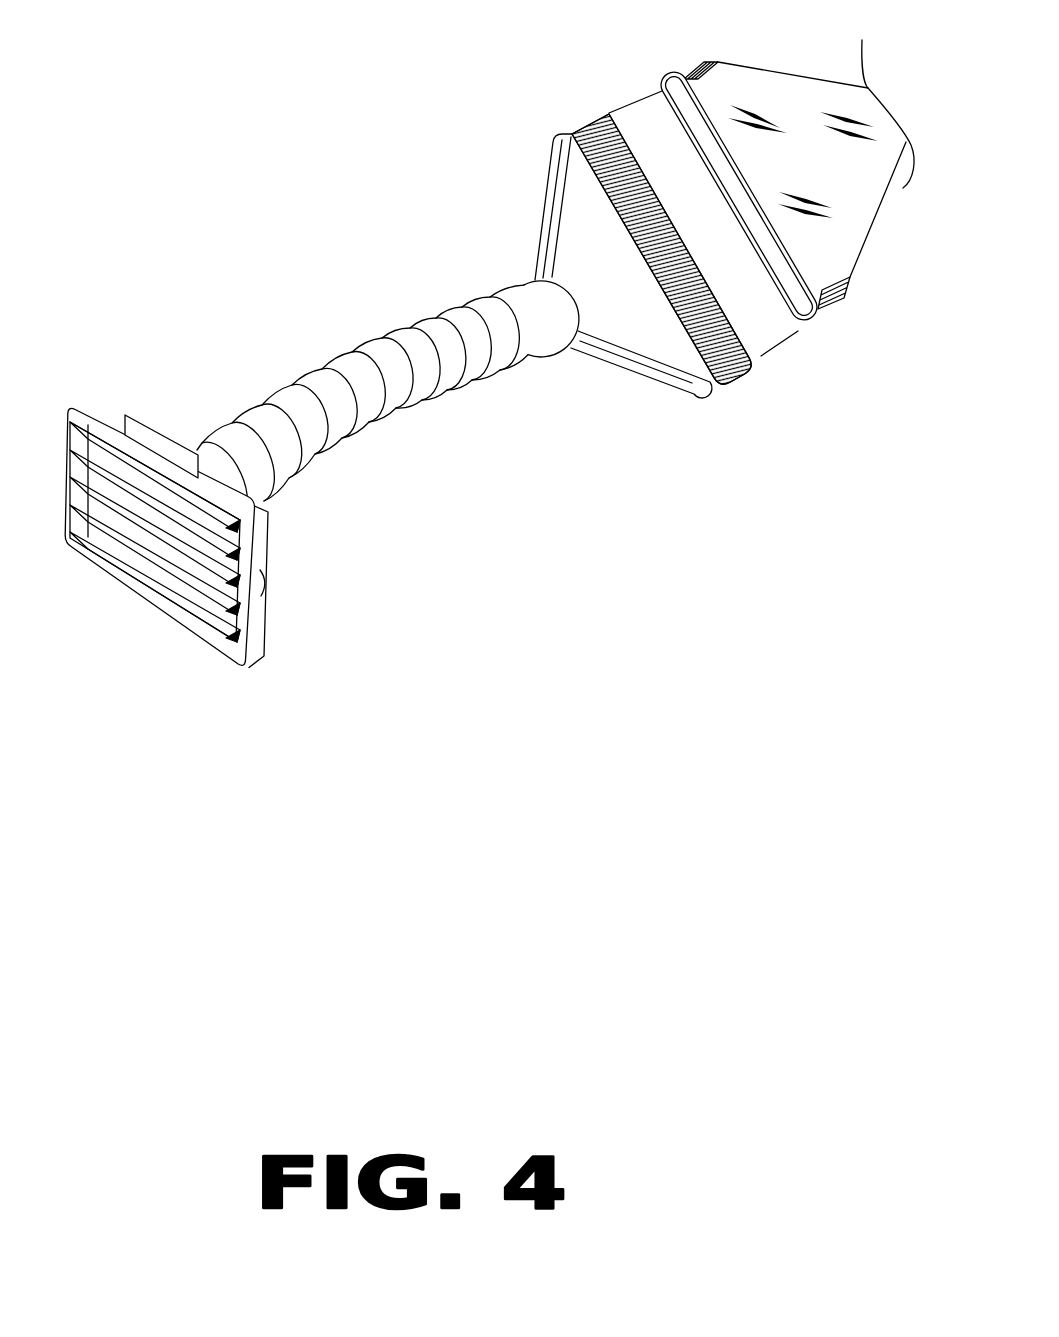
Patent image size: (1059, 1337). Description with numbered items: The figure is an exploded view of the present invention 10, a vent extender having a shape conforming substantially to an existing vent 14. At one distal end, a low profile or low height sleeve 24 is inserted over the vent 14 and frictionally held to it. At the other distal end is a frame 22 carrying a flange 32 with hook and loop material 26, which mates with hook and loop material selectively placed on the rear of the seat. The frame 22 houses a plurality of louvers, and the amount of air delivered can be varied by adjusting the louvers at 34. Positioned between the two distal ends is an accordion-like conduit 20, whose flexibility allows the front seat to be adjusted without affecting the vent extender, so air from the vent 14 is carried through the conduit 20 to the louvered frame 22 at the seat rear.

The present invention 10 is at (240, 215).
The vent 14 is at (678, 83).
The accordion-like conduit 20 is at (325, 368).
The frame 22 is at (167, 613).
The sleeve 24 is at (550, 226).
The hook and loop material 26 is at (141, 421).
The flange 32 is at (165, 448).
The louver adjustment 34 is at (270, 590).